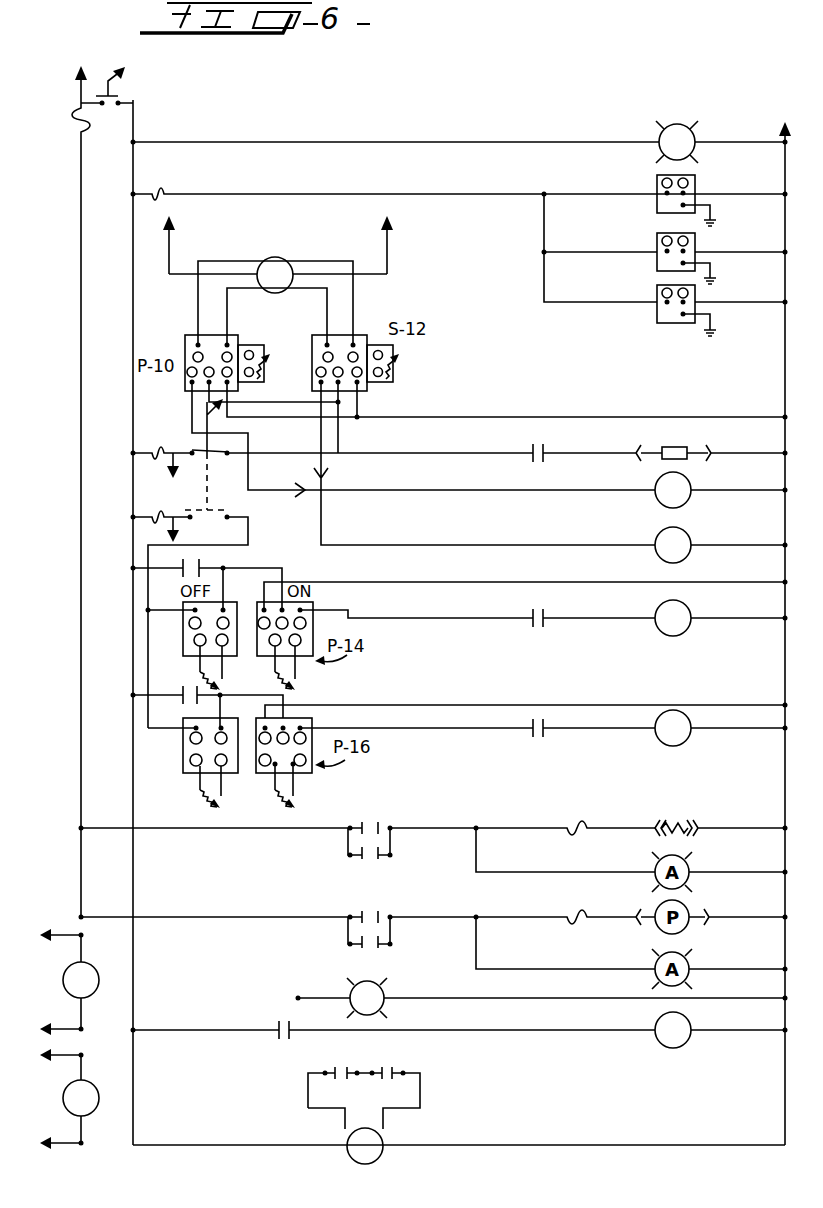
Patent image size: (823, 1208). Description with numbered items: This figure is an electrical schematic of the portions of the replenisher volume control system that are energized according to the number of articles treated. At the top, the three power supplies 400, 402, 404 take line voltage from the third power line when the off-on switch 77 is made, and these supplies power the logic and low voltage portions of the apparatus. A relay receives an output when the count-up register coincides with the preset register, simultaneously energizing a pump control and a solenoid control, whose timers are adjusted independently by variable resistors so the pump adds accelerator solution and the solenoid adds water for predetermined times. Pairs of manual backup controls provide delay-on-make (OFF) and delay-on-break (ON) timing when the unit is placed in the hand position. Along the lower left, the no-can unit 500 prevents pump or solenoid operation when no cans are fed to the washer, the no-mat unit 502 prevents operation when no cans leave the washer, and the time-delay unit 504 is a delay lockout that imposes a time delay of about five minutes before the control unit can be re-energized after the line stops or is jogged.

The off-on switch 77 is at (147, 109).
The power supply 400 is at (730, 167).
The power supply 402 is at (708, 243).
The power supply 404 is at (708, 295).
The "no can" unit 500 is at (110, 983).
The "no mat" unit 502 is at (110, 1104).
The TDB unit 504 is at (404, 1127).